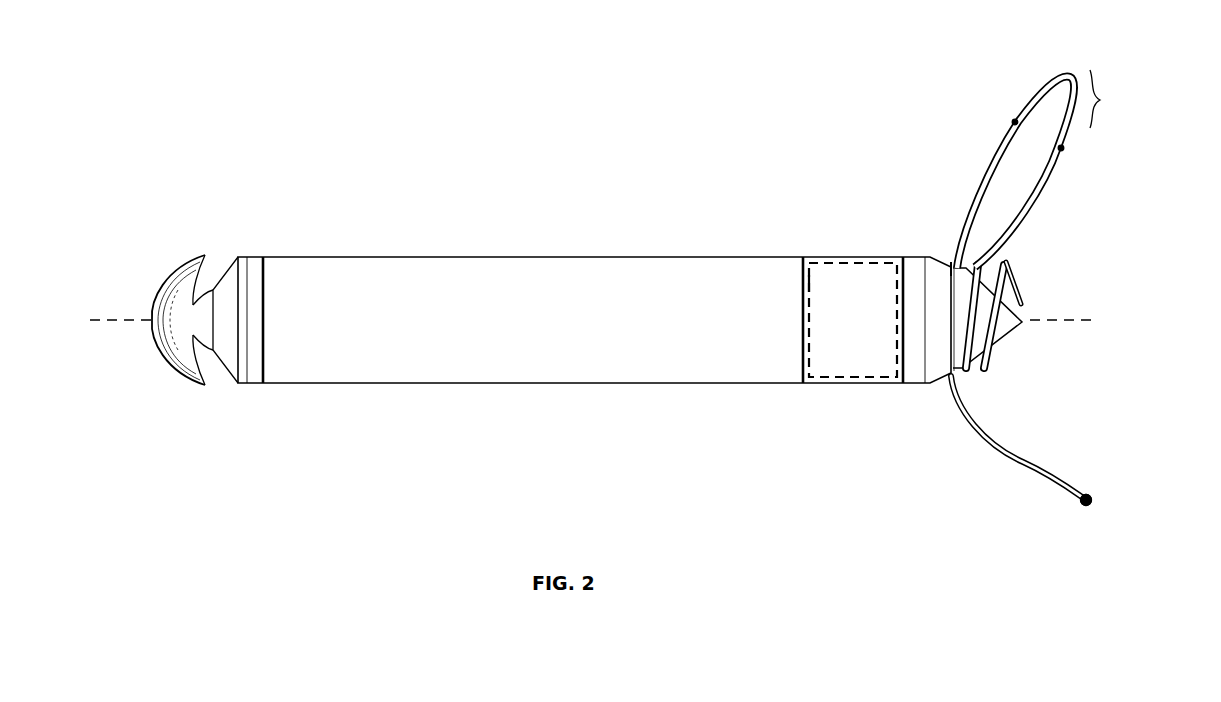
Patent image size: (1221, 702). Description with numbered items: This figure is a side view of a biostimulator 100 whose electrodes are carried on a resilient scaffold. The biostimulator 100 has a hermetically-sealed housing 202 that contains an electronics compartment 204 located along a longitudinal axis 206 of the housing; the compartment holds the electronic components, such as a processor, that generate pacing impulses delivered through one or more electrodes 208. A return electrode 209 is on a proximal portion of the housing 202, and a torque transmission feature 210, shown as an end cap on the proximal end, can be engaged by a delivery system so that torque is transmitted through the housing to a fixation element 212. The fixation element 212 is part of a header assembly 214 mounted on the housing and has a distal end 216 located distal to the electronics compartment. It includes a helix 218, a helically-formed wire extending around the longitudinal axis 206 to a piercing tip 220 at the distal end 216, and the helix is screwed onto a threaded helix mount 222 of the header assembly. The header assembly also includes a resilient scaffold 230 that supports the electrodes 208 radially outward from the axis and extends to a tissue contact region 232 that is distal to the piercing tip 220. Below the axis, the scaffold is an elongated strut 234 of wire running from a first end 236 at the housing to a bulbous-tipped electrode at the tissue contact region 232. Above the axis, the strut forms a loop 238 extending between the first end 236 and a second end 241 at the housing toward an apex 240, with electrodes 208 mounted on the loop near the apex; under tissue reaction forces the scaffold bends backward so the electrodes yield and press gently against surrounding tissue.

The biostimulator 100 is at (293, 203).
The housing 202 is at (845, 388).
The electronics compartment 204 is at (808, 283).
The longitudinal axis 206 is at (137, 320).
The electrode 208 is at (1014, 121).
The return electrode 209 is at (508, 372).
The torque transmission feature 210 is at (212, 375).
The fixation element 212 is at (1049, 315).
The header assembly 214 is at (891, 246).
The distal end 216 is at (1043, 318).
The helix 218 is at (1019, 283).
The piercing tip 220 is at (1022, 323).
The helix mount 222 is at (952, 268).
The resilient scaffold 230 is at (1072, 261).
The tissue contact region 232 is at (1100, 100).
The elongated strut 234 is at (1072, 261).
The first end 236 is at (957, 266).
The loop 238 is at (1072, 261).
The apex 240 is at (1072, 72).
The second end 241 is at (1001, 243).